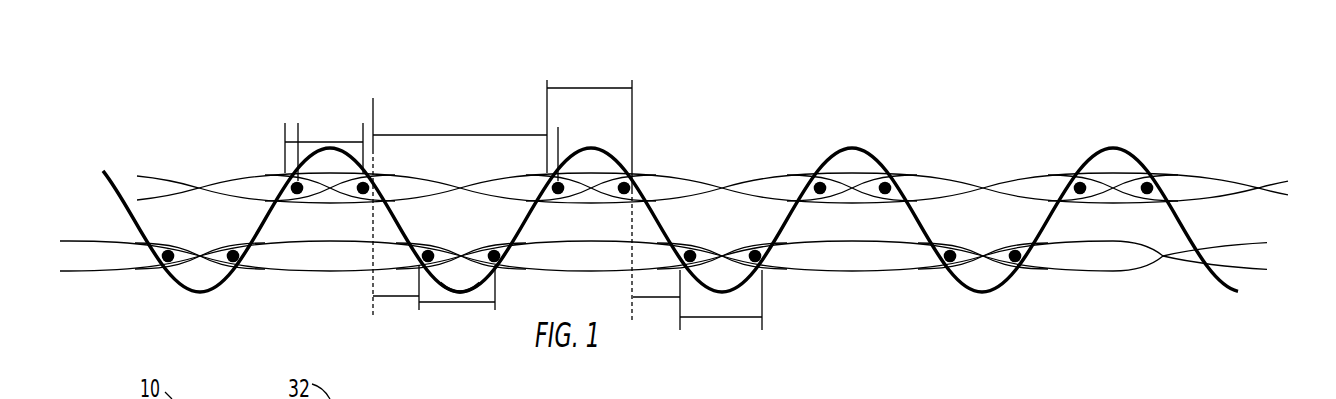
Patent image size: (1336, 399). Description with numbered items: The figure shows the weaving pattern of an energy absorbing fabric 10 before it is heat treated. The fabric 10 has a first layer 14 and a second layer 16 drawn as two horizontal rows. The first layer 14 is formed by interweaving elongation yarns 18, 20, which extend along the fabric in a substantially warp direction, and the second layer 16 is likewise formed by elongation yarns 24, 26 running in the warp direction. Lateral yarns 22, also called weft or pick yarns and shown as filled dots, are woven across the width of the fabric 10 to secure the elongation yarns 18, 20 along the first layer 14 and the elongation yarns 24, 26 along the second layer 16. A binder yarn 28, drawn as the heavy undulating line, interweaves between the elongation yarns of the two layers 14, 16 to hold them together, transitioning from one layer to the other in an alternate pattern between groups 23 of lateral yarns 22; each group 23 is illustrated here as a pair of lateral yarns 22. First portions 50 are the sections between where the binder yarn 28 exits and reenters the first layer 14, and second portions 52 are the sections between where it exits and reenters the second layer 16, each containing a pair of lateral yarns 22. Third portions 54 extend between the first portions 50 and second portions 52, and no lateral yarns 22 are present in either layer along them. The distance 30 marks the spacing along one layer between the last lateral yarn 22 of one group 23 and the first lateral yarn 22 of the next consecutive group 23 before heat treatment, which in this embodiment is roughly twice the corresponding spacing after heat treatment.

The fabric 10 is at (127, 110).
The first layer 14 is at (1288, 161).
The second layer 16 is at (1238, 253).
The elongation yarn 18 is at (1202, 174).
The elongation yarn 20 is at (1270, 180).
The lateral yarns 22 is at (630, 177).
The groups of lateral yarns 23 is at (852, 172).
The elongation yarn 24 is at (1208, 249).
The elongation yarn 26 is at (1183, 259).
The binder yarn 28 is at (459, 292).
The distance 30 is at (446, 135).
The first portions 50 is at (330, 141).
The second portions 52 is at (448, 303).
The third portions 54 is at (395, 297).